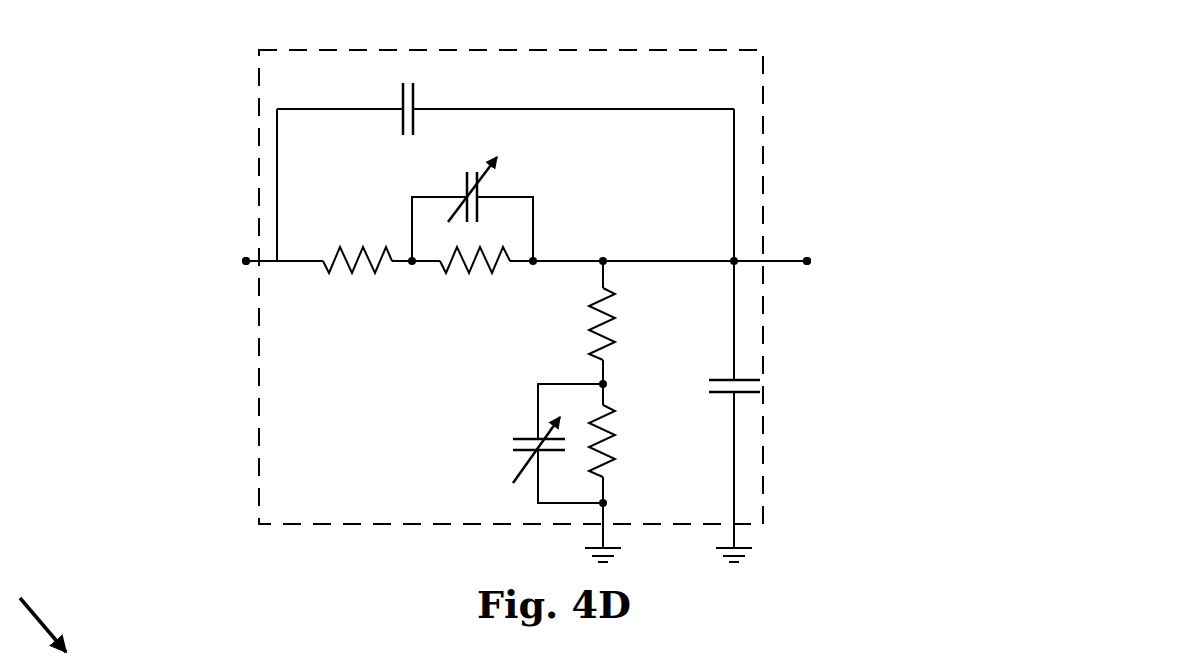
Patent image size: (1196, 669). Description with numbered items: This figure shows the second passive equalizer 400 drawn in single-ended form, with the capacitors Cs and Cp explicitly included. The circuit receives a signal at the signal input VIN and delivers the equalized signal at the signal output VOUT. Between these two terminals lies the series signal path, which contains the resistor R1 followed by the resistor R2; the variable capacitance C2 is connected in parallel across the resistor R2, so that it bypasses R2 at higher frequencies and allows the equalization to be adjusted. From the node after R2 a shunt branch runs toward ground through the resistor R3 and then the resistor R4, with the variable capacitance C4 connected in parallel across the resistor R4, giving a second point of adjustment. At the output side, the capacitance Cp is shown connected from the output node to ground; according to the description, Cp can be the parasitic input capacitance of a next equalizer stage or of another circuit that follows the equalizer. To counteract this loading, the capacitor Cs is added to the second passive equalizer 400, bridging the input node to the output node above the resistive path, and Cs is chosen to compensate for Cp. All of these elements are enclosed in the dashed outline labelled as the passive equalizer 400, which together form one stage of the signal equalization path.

The second passive equalizer 400 is at (184, 113).
The signal input VIN is at (222, 260).
The signal output VOUT is at (842, 260).
The capacitor Cs is at (407, 96).
The variable capacitance C2 is at (472, 204).
The resistor R1 is at (357, 275).
The resistor R2 is at (475, 275).
The resistor R3 is at (616, 324).
The resistor R4 is at (617, 441).
The variable capacitance C4 is at (536, 443).
The capacitor Cp CP is at (717, 387).